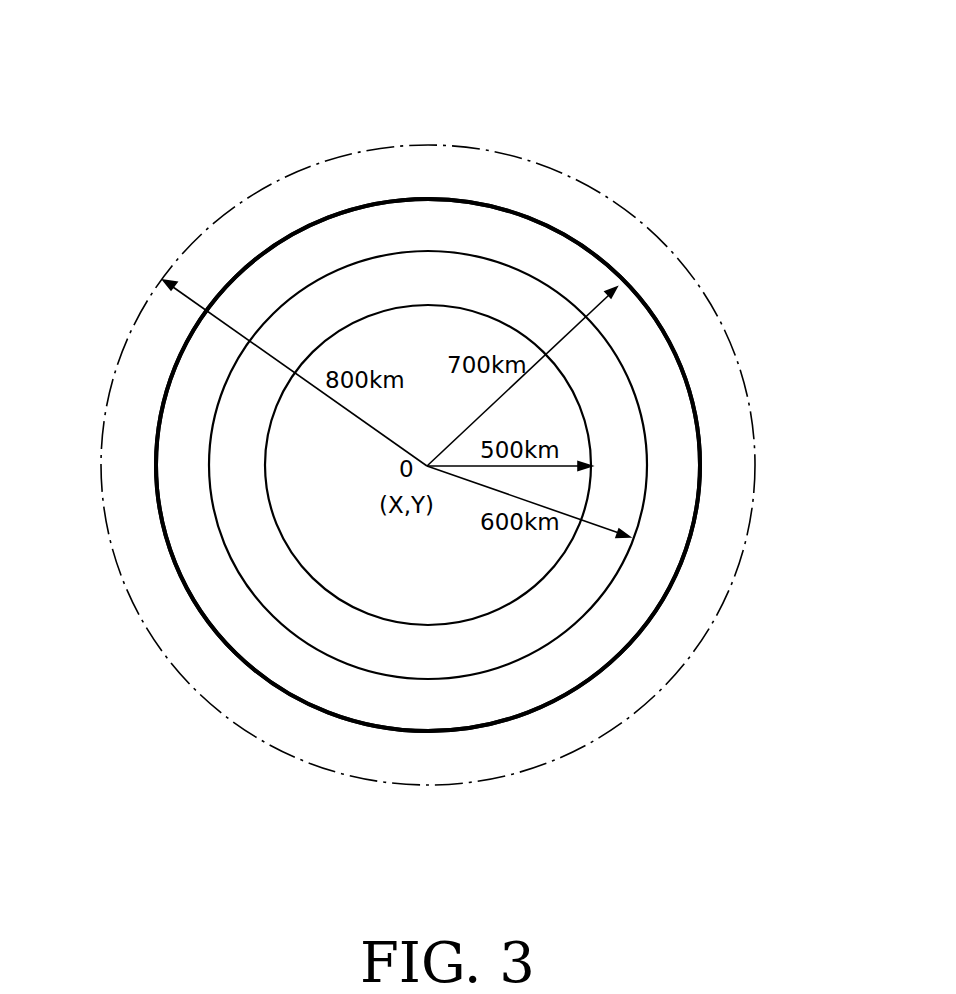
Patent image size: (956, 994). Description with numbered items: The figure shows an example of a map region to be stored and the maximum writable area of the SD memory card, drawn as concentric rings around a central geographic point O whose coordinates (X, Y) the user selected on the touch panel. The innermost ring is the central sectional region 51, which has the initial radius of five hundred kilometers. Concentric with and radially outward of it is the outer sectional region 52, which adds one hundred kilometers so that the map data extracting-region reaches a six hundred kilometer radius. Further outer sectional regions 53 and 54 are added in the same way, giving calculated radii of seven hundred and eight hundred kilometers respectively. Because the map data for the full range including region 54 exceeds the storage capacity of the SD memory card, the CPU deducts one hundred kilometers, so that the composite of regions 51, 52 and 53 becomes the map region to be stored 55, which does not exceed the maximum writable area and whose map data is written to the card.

The central sectional region 51 is at (327, 560).
The outer sectional region 52 is at (415, 657).
The outer sectional region 53 is at (570, 668).
The outer sectional region 54 is at (657, 653).
The map region to be stored 55 is at (460, 190).